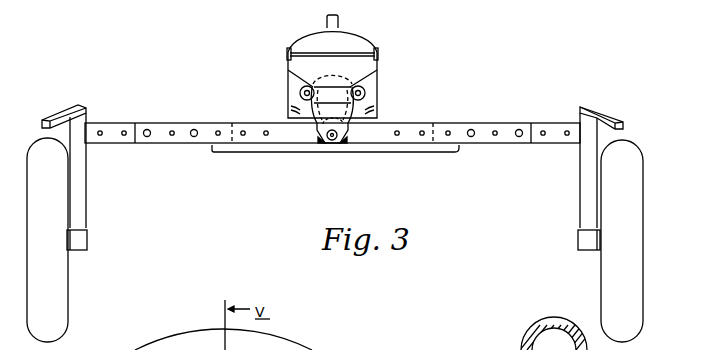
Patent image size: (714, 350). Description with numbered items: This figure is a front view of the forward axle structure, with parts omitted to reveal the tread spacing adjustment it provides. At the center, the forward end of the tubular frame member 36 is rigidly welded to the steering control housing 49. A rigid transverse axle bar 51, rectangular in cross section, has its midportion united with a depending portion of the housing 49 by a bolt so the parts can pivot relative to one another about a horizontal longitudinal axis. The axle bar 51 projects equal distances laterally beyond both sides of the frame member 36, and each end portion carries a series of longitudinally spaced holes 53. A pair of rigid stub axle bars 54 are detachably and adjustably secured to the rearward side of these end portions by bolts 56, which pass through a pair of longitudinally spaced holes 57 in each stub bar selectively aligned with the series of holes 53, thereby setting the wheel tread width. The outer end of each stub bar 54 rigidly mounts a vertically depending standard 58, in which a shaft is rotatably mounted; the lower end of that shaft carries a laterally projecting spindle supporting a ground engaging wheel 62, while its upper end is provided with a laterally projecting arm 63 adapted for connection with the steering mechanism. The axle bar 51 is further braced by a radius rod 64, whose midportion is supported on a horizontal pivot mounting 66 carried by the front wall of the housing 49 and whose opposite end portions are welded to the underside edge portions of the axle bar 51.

The tubular frame member 36 is at (347, 81).
The steering control housing 49 is at (398, 40).
The transverse axle bar 51 is at (258, 123).
The holes 53 is at (422, 131).
The stub axle bars 54 is at (117, 123).
The bolts 56 is at (194, 137).
The holes 57 is at (123, 136).
The standard 58 is at (85, 204).
The ground engaging wheel 62 is at (68, 287).
The arm 63 is at (62, 113).
The radius rod 64 is at (403, 152).
The pivot mounting 66 is at (330, 145).